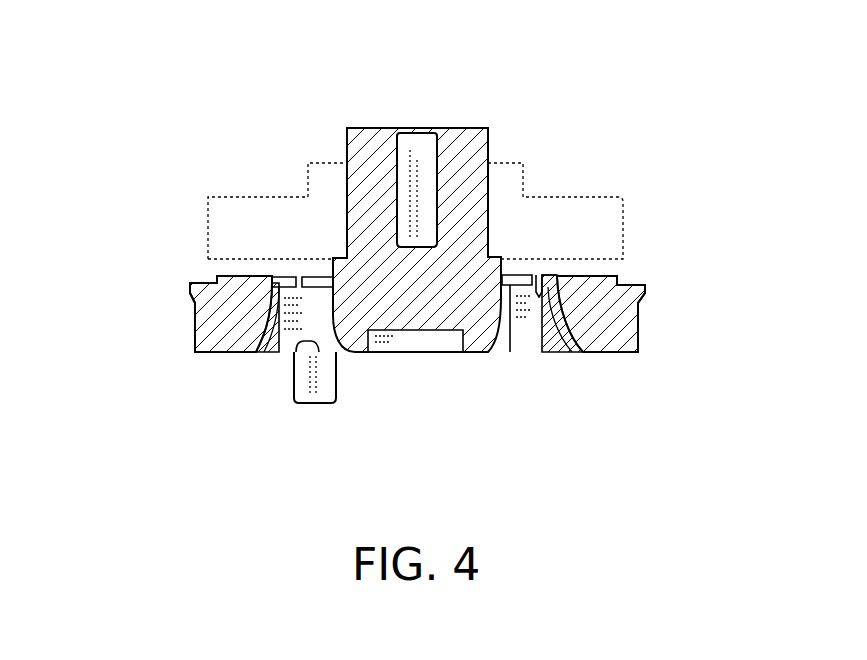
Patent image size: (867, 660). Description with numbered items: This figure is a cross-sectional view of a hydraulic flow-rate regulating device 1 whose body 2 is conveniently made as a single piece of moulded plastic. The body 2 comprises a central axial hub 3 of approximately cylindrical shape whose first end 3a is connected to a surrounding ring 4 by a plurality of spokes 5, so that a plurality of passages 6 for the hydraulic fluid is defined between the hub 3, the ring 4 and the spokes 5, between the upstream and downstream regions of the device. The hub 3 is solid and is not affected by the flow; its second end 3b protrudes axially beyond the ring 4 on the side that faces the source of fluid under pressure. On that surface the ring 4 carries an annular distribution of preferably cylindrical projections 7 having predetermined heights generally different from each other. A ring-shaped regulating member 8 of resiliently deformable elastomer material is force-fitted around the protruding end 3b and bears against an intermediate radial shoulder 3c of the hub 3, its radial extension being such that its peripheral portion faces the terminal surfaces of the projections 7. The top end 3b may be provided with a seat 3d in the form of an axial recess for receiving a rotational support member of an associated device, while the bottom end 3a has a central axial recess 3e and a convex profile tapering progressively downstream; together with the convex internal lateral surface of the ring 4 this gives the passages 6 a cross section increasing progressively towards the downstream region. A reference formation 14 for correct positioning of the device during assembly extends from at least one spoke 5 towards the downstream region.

The hydraulic flow-rate regulating device 1 is at (262, 222).
The body 2 is at (235, 358).
The central axial hub 3 is at (420, 253).
The first end 3a is at (462, 314).
The second end 3b is at (347, 162).
The intermediate radial shoulder 3c is at (342, 257).
The seat 3d is at (428, 150).
The central axial recess 3e is at (396, 354).
The surrounding ring 4 is at (190, 282).
The spokes 5 is at (256, 310).
The passages 6 is at (288, 345).
The projections 7 is at (307, 260).
The regulating member 8 is at (220, 197).
The reference formation 14 is at (315, 404).